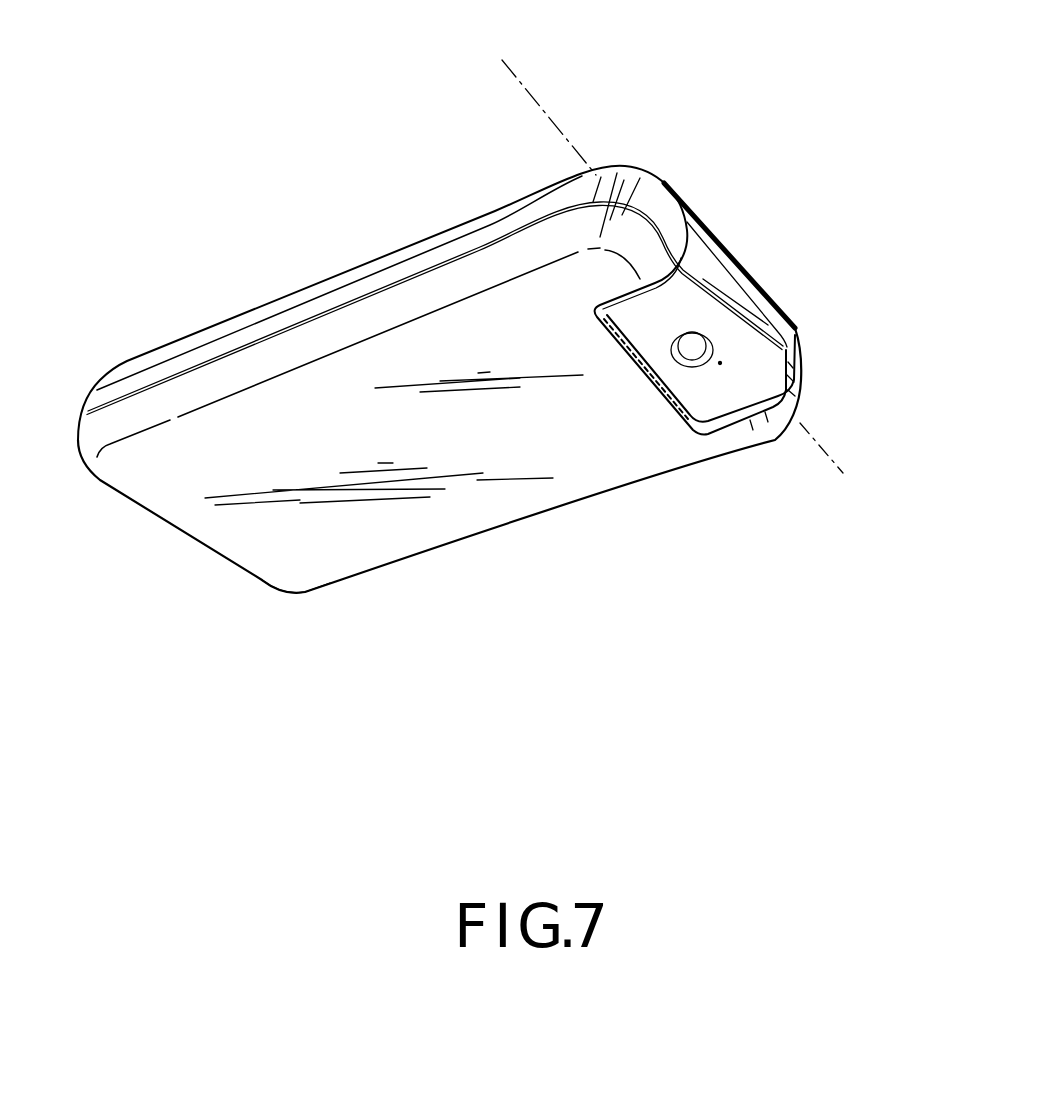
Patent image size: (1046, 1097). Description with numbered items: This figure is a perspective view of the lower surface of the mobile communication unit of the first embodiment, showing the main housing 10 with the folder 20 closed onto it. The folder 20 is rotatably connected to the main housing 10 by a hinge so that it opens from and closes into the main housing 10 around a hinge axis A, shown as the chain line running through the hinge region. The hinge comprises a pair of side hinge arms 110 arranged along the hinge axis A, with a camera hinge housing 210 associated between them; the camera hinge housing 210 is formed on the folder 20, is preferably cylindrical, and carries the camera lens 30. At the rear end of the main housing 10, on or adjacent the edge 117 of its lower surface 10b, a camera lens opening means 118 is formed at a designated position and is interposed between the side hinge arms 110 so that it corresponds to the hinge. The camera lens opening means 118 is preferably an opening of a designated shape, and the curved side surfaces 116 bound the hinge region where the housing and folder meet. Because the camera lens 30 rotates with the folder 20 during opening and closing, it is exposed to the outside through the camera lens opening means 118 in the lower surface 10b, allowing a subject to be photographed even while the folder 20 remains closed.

The main housing 10 is at (500, 499).
The lower surface 10b is at (338, 557).
The folder 20 is at (283, 309).
The camera lens 30 is at (706, 342).
The side hinge arms 110 is at (628, 188).
The curved side surface 116 is at (647, 243).
The edge 117 is at (737, 252).
The camera lens opening means 118 is at (714, 386).
The camera hinge housing 210 is at (753, 287).
The hinge axis A is at (540, 103).